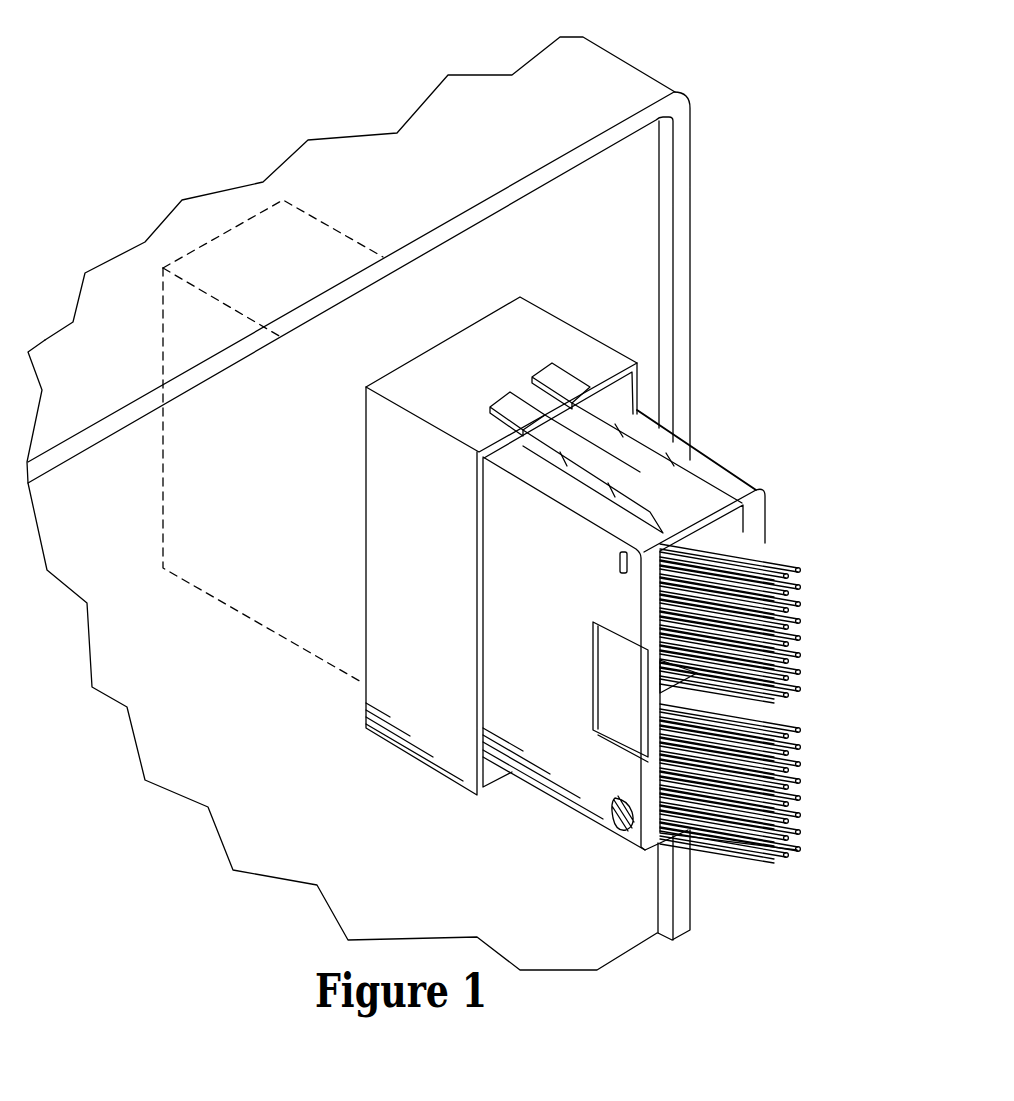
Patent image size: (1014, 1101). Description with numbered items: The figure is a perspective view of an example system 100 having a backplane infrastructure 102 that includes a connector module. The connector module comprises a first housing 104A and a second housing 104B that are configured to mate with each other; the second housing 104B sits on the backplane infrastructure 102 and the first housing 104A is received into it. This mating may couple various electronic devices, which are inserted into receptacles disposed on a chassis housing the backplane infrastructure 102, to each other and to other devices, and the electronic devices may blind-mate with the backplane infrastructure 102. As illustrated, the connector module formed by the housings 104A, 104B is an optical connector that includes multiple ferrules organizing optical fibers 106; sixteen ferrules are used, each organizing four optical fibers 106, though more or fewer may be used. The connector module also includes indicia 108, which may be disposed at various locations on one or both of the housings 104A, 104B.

The system 100 is at (733, 82).
The backplane infrastructure 102 is at (642, 272).
The first housing 104A is at (727, 472).
The second housing 104B is at (582, 327).
The optical fibers 106 is at (815, 612).
The indicia 108 is at (617, 562).